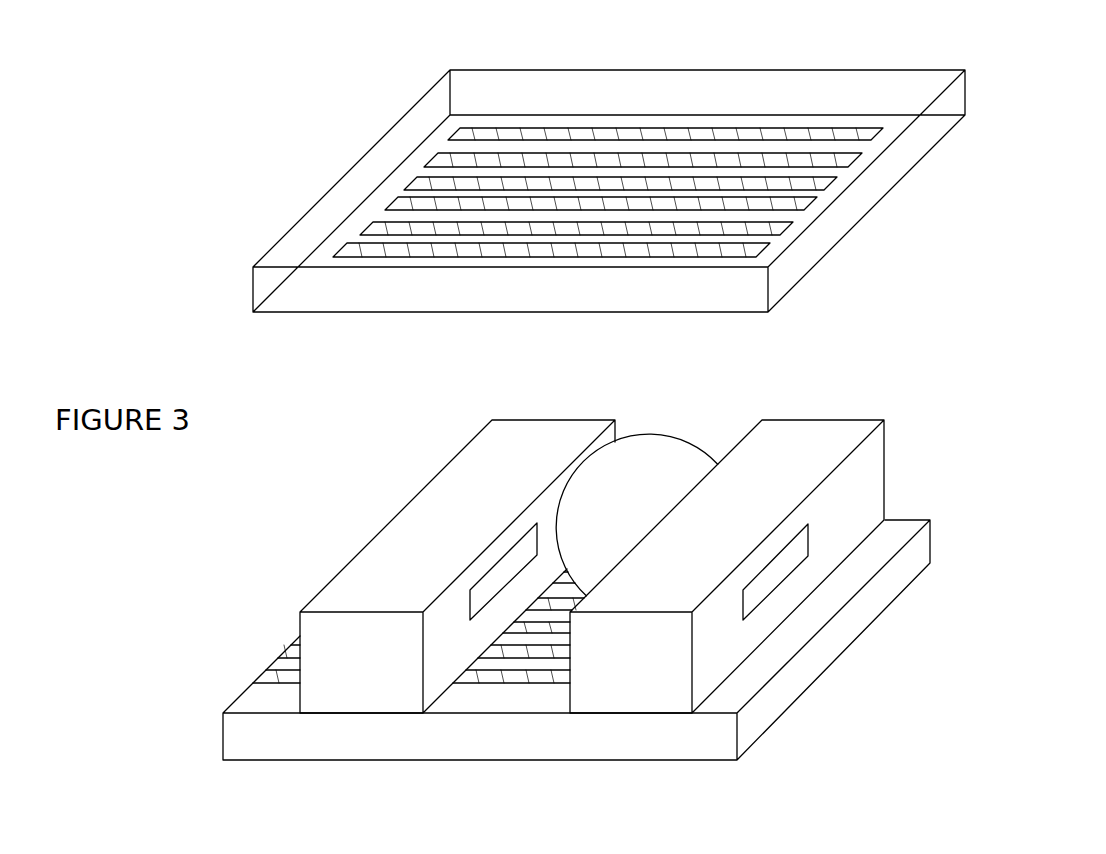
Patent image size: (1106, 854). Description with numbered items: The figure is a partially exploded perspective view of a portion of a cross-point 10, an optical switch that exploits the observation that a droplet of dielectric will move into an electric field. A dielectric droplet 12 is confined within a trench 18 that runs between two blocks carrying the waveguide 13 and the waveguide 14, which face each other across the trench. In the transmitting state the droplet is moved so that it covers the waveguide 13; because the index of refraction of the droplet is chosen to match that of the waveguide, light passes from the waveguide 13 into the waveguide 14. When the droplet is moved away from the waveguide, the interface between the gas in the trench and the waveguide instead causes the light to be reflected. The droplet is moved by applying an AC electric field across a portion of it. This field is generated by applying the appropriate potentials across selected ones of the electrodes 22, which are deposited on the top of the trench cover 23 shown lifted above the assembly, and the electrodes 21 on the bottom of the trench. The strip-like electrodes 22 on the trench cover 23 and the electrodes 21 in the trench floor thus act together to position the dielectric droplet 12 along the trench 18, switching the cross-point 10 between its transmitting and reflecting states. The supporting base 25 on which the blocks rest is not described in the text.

The cross-point 10 is at (133, 117).
The dielectric droplet 12 is at (662, 445).
The waveguide 13 is at (818, 537).
The waveguide 14 is at (493, 577).
The trench 18 is at (528, 697).
The electrodes 21 is at (268, 677).
The electrodes 22 is at (355, 242).
The trench cover 23 is at (962, 105).
The base substrate 25 is at (866, 597).